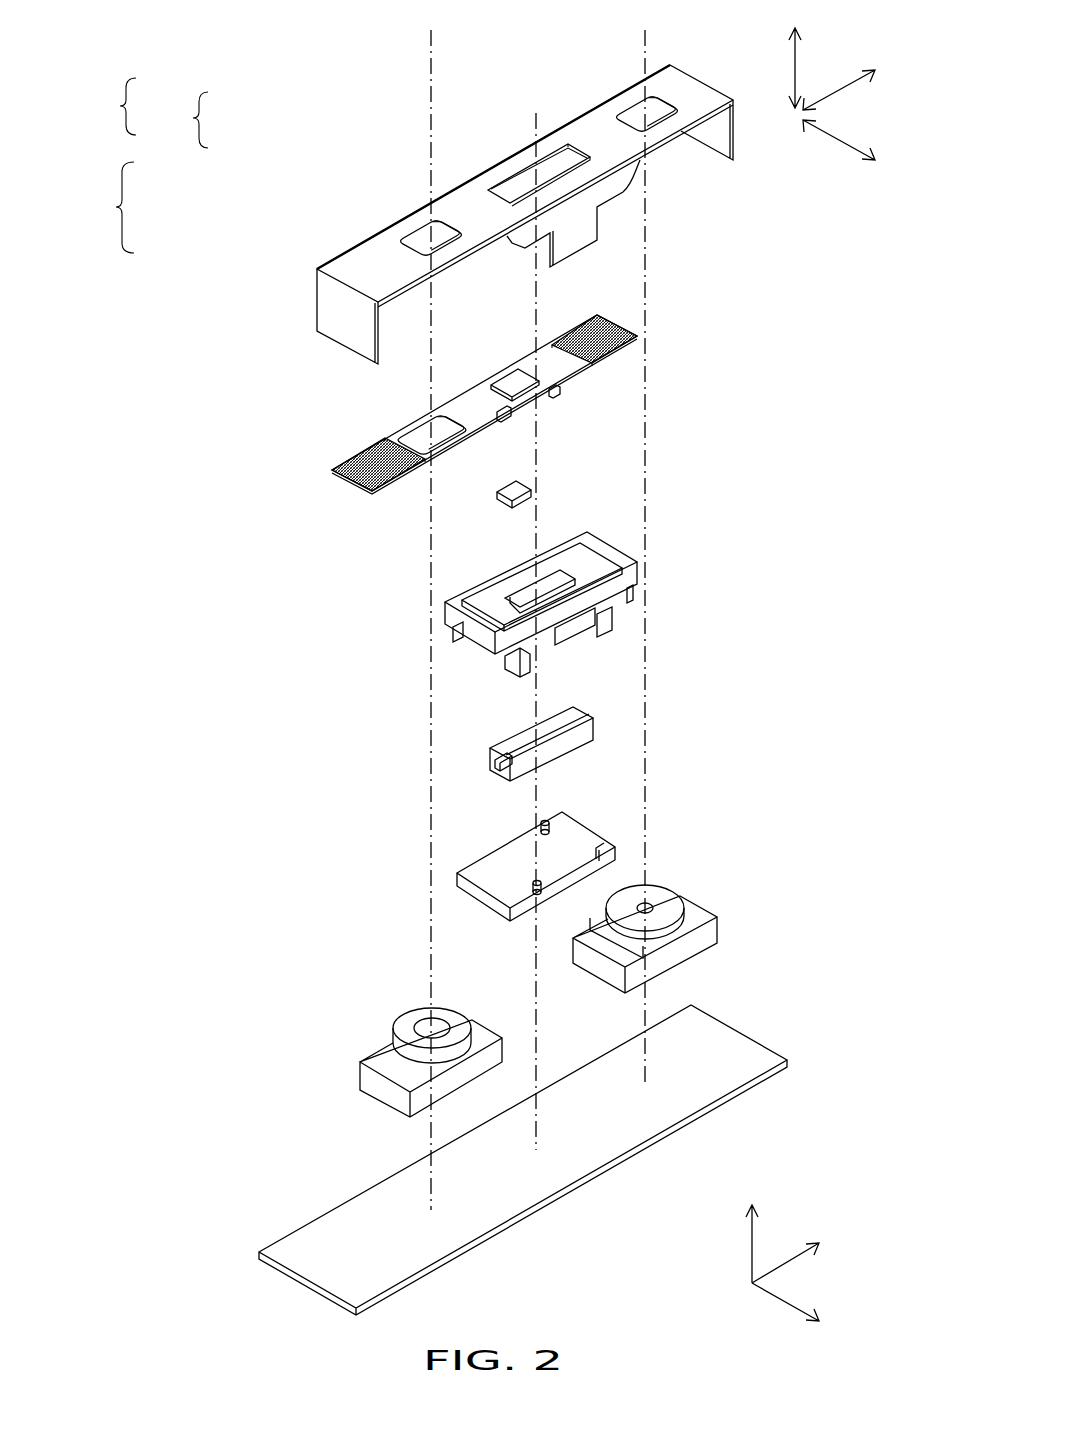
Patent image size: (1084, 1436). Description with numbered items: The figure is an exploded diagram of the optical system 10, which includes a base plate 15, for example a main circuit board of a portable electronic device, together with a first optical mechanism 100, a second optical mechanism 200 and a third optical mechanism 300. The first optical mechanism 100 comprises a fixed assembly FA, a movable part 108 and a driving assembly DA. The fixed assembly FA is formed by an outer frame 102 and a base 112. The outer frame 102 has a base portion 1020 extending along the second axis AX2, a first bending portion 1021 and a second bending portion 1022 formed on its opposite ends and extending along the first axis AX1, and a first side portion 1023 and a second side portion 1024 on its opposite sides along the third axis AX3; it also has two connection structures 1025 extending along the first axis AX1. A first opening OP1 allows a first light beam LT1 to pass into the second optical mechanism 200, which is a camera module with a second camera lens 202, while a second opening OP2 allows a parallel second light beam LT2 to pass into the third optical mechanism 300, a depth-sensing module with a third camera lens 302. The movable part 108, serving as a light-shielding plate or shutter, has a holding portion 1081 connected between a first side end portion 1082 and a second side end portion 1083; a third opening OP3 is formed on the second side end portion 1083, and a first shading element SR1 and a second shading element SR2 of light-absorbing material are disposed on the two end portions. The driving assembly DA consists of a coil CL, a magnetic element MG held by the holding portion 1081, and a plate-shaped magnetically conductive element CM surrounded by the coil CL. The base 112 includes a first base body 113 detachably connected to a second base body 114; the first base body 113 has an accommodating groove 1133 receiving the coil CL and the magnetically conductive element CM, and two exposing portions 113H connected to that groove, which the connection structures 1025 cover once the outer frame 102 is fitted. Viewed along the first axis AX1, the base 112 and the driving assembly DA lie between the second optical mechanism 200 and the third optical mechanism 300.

The optical system 10 is at (120, 31).
The first optical mechanism 100 is at (312, 256).
The outer frame 102 is at (700, 81).
The base portion 1020 is at (480, 203).
The first bending portion 1021 is at (723, 142).
The second bending portion 1022 is at (327, 316).
The first side portion 1023 is at (470, 262).
The second side portion 1024 is at (552, 157).
The connection structures 1025 is at (520, 182).
The first opening OP1 is at (637, 112).
The second opening OP2 is at (420, 232).
The third opening OP3 is at (414, 438).
The movable part 108 is at (351, 481).
The holding portion 1081 is at (498, 420).
The first side end portion 1082 is at (607, 357).
The second side end portion 1083 is at (395, 487).
The first shading element SR1 is at (597, 335).
The second shading element SR2 is at (360, 462).
The magnetic element MG is at (500, 495).
The base 112 is at (175, 120).
The first base body 113 is at (489, 652).
The accommodating groove 1133 is at (563, 587).
The exposing portions 113H is at (569, 636).
The coil CL is at (563, 720).
The magnetically conductive element CM is at (493, 762).
The second base body 114 is at (485, 895).
The second optical mechanism 200 is at (719, 919).
The second camera lens 202 is at (646, 904).
The third optical mechanism 300 is at (388, 1036).
The third camera lens 302 is at (432, 1025).
The base plate 15 is at (728, 1075).
The fixed assembly FA is at (103, 106).
The driving assembly DA is at (101, 207).
The first light beam LT1 is at (646, 542).
The second light beam LT2 is at (431, 605).
The first axis AX1 is at (798, 54).
The second axis AX2 is at (869, 84).
The third axis AX3 is at (869, 149).